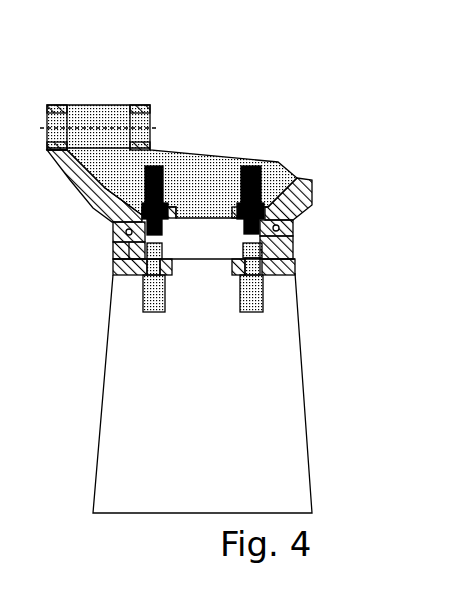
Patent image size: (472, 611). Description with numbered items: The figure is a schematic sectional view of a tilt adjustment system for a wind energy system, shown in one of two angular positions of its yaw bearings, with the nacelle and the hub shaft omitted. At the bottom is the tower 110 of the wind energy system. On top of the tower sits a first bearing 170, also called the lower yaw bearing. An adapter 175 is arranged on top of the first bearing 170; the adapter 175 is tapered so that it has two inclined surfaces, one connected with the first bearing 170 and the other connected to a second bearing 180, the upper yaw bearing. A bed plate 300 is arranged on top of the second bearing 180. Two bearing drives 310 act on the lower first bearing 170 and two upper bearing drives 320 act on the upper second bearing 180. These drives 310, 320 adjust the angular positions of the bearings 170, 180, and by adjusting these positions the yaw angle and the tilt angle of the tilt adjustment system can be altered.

The tower 110 is at (305, 405).
The first bearing 170 is at (295, 256).
The adapter 175 is at (293, 243).
The second bearing 180 is at (295, 230).
The bed plate 300 is at (133, 104).
The bearing drives 310 is at (153, 312).
The upper bearing drives 320 is at (160, 166).